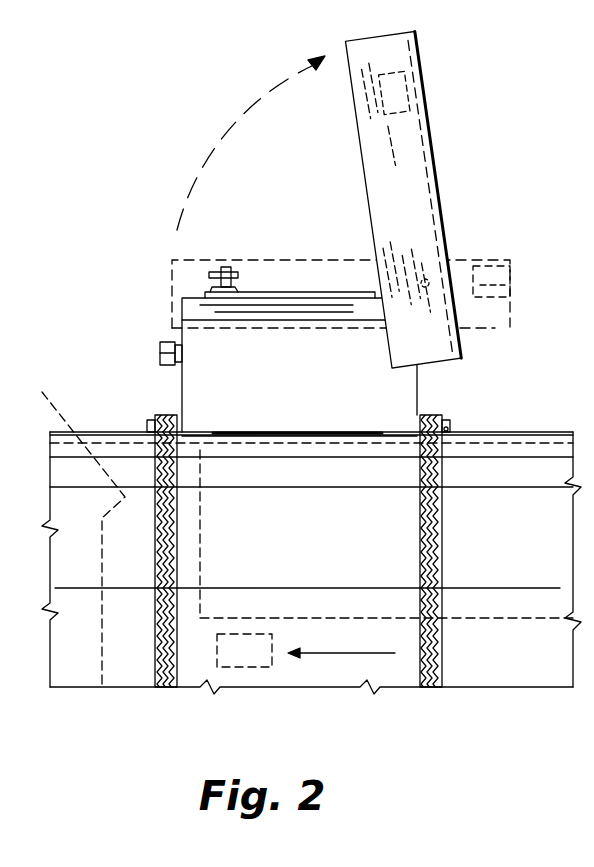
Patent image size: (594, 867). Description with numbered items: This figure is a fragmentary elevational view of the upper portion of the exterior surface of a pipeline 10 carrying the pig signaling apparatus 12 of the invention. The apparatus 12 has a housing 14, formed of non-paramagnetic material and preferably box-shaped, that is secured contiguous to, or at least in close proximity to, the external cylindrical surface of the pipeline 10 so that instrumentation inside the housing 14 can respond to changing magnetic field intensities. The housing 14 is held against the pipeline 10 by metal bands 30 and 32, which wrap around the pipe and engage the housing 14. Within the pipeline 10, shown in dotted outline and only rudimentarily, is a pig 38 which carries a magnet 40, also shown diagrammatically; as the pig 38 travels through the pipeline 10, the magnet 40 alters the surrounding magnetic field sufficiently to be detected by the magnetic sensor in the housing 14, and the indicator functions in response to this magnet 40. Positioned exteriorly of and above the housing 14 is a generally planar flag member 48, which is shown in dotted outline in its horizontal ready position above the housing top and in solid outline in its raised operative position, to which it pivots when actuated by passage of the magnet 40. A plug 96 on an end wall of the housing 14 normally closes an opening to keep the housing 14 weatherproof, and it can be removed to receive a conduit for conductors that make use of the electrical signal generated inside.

The pipeline 10 is at (512, 600).
The pig signaling apparatus 12 is at (172, 150).
The housing 14 is at (193, 392).
The metal band 30 is at (153, 665).
The metal band 32 is at (440, 548).
The pig 38 is at (74, 527).
The magnet 40 is at (250, 653).
The flag member 48 is at (397, 150).
The plug 96 is at (163, 342).